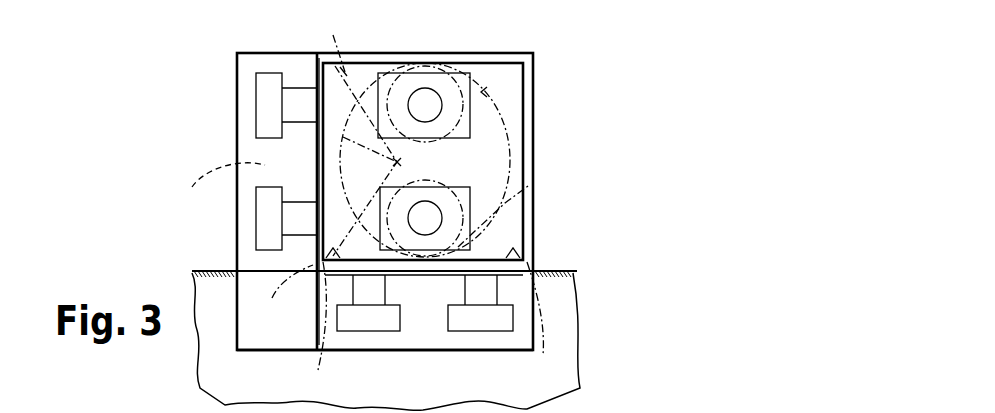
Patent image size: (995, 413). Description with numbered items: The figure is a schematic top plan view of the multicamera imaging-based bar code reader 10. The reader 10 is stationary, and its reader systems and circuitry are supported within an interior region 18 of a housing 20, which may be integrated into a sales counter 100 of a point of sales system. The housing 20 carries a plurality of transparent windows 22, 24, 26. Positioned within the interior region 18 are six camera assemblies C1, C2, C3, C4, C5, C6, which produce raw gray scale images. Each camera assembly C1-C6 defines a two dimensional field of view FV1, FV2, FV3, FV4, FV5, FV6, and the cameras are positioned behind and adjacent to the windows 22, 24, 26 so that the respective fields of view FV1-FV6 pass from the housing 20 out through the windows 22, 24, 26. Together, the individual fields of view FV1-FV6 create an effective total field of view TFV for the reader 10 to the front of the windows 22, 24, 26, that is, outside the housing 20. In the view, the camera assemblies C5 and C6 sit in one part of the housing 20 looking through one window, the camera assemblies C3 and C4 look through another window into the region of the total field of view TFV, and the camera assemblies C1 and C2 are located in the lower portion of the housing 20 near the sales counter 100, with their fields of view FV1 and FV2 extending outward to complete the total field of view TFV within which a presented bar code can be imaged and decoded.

The bar code reader 10 is at (557, 43).
The interior region 18 is at (215, 185).
The housing 20 is at (228, 72).
The transparent window 22 is at (423, 272).
The transparent window 24 is at (514, 247).
The transparent window 26 is at (316, 80).
The sales counter 100 is at (553, 271).
The camera assembly C1 is at (372, 317).
The camera assembly C2 is at (485, 320).
The camera assembly C3 is at (470, 105).
The camera assembly C4 is at (470, 195).
The camera assembly C5 is at (257, 105).
The camera assembly C6 is at (257, 220).
The field of view FV1 is at (308, 330).
The field of view FV2 is at (545, 326).
The field of view FV3 is at (470, 123).
The field of view FV4 is at (470, 207).
The field of view FV5 is at (347, 41).
The field of view FV6 is at (282, 298).
The total field of view TFV is at (492, 73).